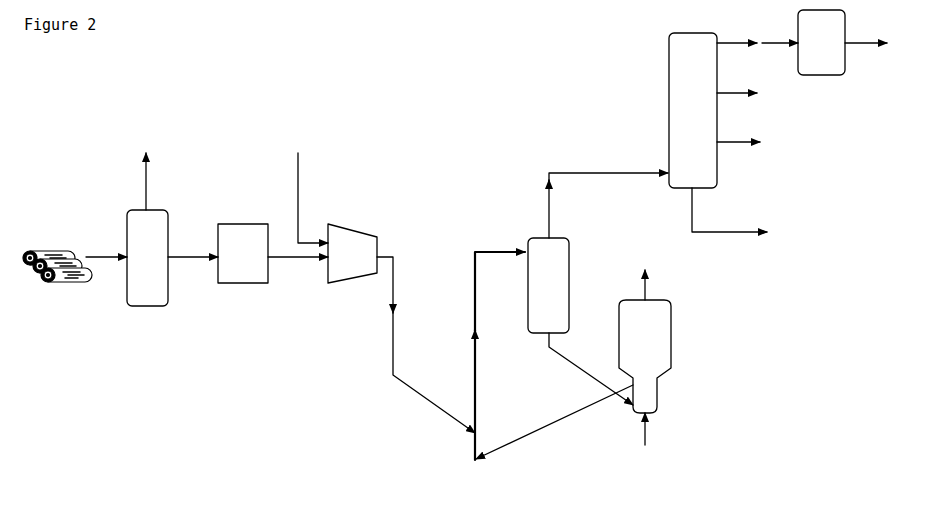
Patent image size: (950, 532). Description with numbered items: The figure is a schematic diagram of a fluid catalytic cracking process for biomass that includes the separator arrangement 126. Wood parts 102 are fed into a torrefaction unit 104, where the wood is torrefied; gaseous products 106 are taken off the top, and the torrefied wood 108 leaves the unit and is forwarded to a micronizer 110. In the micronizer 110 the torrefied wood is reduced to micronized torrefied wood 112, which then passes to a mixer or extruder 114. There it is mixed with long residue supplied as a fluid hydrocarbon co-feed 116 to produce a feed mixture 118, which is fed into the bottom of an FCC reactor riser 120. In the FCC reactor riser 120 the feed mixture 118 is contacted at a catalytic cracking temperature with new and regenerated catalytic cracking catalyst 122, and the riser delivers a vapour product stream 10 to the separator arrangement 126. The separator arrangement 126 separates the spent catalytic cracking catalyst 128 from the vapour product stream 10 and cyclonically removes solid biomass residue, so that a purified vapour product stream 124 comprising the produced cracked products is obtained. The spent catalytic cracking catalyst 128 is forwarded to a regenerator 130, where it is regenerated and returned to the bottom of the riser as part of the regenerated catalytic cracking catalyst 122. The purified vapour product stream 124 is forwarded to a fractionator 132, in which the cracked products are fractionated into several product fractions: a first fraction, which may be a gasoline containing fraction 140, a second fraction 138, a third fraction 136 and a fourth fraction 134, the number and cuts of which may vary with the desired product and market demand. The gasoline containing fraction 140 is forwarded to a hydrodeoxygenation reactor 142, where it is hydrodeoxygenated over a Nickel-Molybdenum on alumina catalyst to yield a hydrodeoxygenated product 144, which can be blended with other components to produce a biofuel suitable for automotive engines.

The vapour product stream 10 is at (484, 252).
The wood parts 102 is at (66, 290).
The torrefaction unit 104 is at (150, 306).
The gaseous products 106 is at (146, 172).
The torrefied wood 108 is at (202, 257).
The micronizer 110 is at (247, 283).
The micronized torrefied wood 112 is at (306, 257).
The mixer or extruder 114 is at (355, 283).
The fluid hydrocarbon co-feed 116 is at (298, 174).
The feed mixture 118 is at (402, 382).
The FCC reactor riser 120 is at (473, 437).
The new and regenerated catalytic cracking catalyst 122 is at (534, 438).
The purified vapour product stream 124 is at (550, 188).
The separator arrangement 126 is at (569, 247).
The spent catalytic cracking catalyst 128 is at (562, 360).
The regenerator 130 is at (671, 333).
The fractionator 132 is at (669, 85).
The fourth fraction 134 is at (745, 233).
The third fraction 136 is at (742, 144).
The second fraction 138 is at (742, 95).
The gasoline containing fraction 140 is at (742, 45).
The hydrodeoxygenation reactor 142 is at (830, 76).
The hydrodeoxygenated product 144 is at (872, 45).